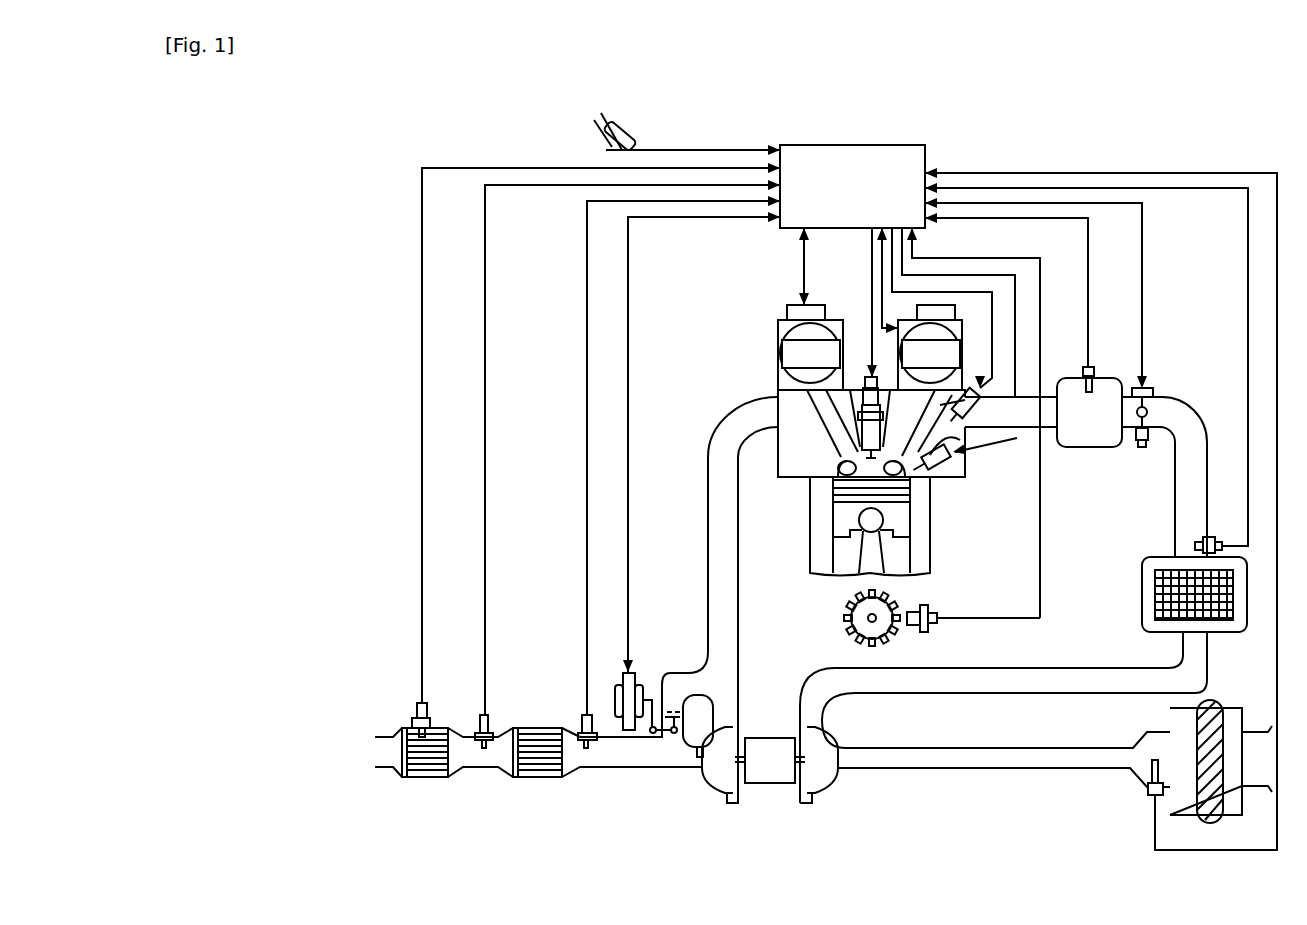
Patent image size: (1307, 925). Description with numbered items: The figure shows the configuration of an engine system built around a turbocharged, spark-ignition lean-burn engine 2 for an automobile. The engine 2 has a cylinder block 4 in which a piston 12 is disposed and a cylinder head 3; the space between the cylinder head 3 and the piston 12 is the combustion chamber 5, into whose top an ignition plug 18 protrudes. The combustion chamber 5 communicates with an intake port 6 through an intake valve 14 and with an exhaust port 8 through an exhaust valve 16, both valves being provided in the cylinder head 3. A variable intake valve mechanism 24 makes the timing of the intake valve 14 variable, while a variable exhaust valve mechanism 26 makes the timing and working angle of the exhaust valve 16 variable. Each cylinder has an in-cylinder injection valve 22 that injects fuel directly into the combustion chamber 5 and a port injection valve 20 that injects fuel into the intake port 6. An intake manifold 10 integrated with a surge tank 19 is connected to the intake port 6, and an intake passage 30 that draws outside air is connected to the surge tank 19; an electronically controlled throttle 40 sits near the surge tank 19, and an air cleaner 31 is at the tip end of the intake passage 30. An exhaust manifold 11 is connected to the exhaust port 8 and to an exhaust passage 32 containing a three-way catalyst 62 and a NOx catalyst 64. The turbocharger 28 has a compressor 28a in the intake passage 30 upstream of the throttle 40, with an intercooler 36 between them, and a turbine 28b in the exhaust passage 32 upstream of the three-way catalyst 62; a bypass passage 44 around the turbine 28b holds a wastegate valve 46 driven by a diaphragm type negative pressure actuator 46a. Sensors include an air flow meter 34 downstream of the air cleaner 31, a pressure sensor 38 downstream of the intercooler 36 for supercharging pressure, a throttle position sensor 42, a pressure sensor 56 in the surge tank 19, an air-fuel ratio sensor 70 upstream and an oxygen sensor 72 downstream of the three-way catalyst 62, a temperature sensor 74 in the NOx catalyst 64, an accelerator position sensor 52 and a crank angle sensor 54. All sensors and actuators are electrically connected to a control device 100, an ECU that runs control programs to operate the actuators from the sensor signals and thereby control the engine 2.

The engine 2 is at (744, 326).
The cylinder head 3 is at (778, 470).
The cylinder block 4 is at (810, 560).
The combustion chamber 5 is at (907, 492).
The intake port 6 is at (933, 430).
The exhaust port 8 is at (812, 430).
The intake manifold 10 is at (1022, 430).
The exhaust manifold 11 is at (723, 437).
The piston 12 is at (837, 532).
The intake valve 14 is at (893, 476).
The exhaust valve 16 is at (847, 478).
The ignition plug 18 is at (855, 388).
The surge tank 19 is at (1082, 447).
The port injection valve 20 is at (987, 403).
The in-cylinder injection valve 22 is at (940, 465).
The variable intake valve mechanism 24 is at (963, 318).
The variable exhaust valve mechanism 26 is at (778, 352).
The turbocharger 28 is at (788, 749).
The compressor 28a is at (842, 743).
The turbine 28b is at (722, 768).
The intake passage 30 is at (1207, 420).
The air cleaner 31 is at (1213, 705).
The exhaust passage 32 is at (707, 532).
The air flow meter 34 is at (1150, 787).
The intercooler 36 is at (1142, 600).
The pressure sensor 38 is at (1210, 535).
The throttle 40 is at (1158, 393).
The throttle position sensor 42 is at (1142, 447).
The bypass passage 44 is at (685, 672).
The wastegate valve 46 is at (673, 735).
The negative pressure actuator 46a is at (643, 685).
The accelerator position sensor 52 is at (635, 128).
The crank angle sensor 54 is at (937, 613).
The pressure sensor 56 is at (1098, 370).
The three-way catalyst 62 is at (530, 728).
The NOx catalyst 64 is at (442, 727).
The air-fuel ratio sensor 70 is at (582, 745).
The oxygen sensor 72 is at (477, 743).
The temperature sensor 74 is at (420, 742).
The control device 100 is at (897, 145).